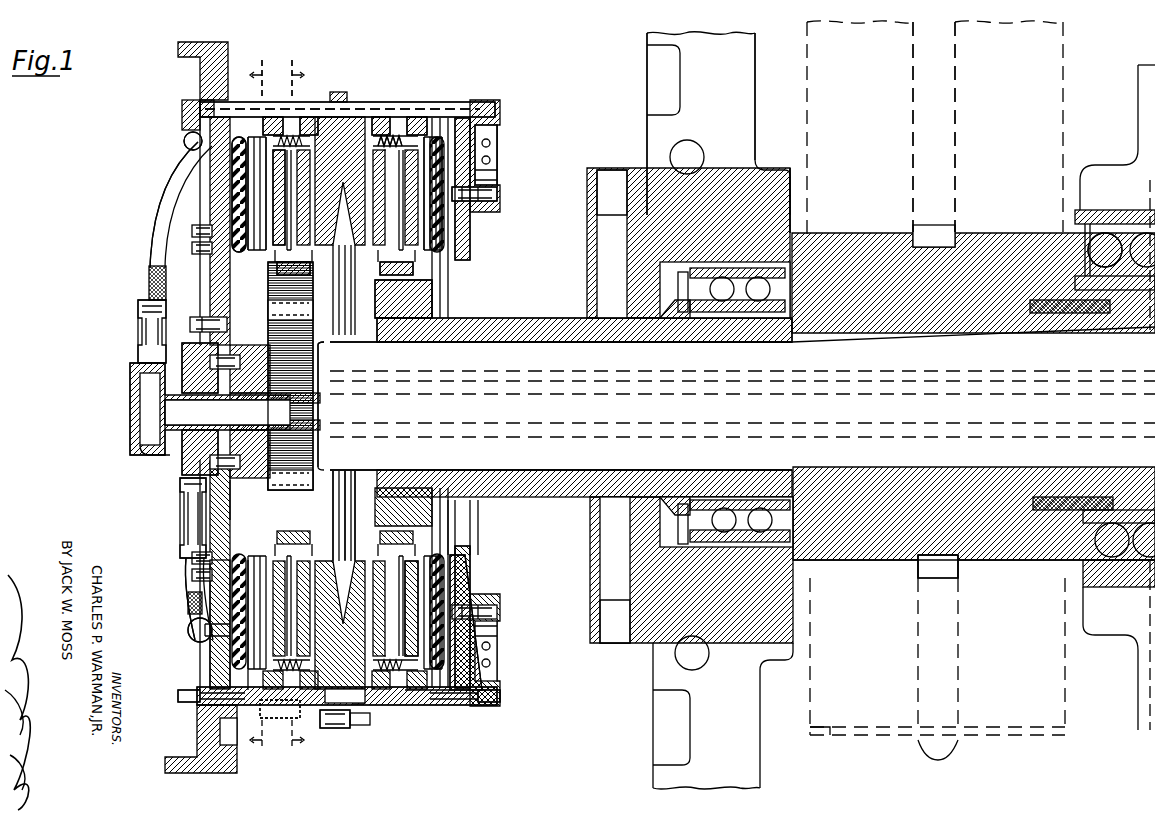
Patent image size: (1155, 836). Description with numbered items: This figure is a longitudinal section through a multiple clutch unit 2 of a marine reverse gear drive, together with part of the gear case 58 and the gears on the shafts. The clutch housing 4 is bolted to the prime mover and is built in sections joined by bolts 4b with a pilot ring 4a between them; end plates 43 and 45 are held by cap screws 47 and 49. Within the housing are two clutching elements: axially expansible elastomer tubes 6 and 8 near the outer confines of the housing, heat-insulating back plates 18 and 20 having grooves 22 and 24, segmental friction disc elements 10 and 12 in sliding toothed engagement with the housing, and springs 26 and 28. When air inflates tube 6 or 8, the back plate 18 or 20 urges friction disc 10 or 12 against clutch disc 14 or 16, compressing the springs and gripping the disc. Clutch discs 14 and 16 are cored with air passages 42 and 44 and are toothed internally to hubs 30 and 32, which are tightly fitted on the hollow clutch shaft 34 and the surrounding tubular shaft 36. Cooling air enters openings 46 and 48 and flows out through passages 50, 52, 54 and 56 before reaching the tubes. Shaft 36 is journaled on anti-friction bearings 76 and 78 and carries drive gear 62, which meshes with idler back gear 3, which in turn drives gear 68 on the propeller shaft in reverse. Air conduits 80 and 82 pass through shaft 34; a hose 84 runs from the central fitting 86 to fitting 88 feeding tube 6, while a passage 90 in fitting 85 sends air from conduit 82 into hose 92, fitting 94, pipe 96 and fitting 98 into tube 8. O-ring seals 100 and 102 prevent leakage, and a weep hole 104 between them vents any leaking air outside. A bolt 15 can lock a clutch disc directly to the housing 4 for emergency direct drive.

The multiple clutch unit 2 is at (484, 712).
The idler back gear 3 is at (928, 766).
The housing 4 is at (380, 724).
The ring 4a is at (345, 490).
The bolts 4b is at (352, 706).
The axially expansible tube 6 is at (238, 170).
The axially expansible tube 8 is at (440, 244).
The friction disc element 10 is at (300, 125).
The friction disc element 12 is at (365, 122).
The clutch disc 14 is at (280, 268).
The bolt 15 is at (265, 716).
The clutch disc 16 is at (420, 262).
The back plate 18 is at (258, 568).
The back plate 20 is at (430, 565).
The grooves 22 is at (240, 190).
The grooves 24 is at (462, 224).
The spring 26 is at (320, 706).
The spring 28 is at (412, 686).
The hub 30 is at (270, 312).
The hub 32 is at (420, 302).
The clutch shaft 34 is at (552, 346).
The tubular clutch shaft 36 is at (506, 326).
The air passages 42 is at (290, 212).
The end plate 43 is at (218, 660).
The air passages 44 is at (440, 232).
The end plate 45 is at (478, 668).
The opening 46 is at (235, 528).
The cap screws 47 is at (192, 704).
The opening 48 is at (466, 512).
The cap screws 49 is at (488, 690).
The air passage 50 is at (252, 140).
The air passage 52 is at (448, 110).
The air passage 54 is at (278, 120).
The air passage 56 is at (392, 130).
The case 58 is at (690, 86).
The drive gear 62 is at (906, 584).
The gear 68 is at (960, 94).
The anti-friction bearing 76 is at (1104, 255).
The anti-friction bearing 78 is at (780, 288).
The air conduit 80 is at (305, 390).
The air conduit 82 is at (312, 430).
The hose 84 is at (198, 596).
The fitting 85 is at (138, 402).
The fitting 86 is at (200, 480).
The fitting 88 is at (190, 631).
The passage 90 is at (170, 380).
The hose 92 is at (158, 235).
The fitting 94 is at (186, 143).
The pipe 96 is at (440, 108).
The fitting 98 is at (496, 165).
The O-ring seal 100 is at (212, 442).
The O-ring seal 102 is at (138, 452).
The weep hole 104 is at (140, 326).